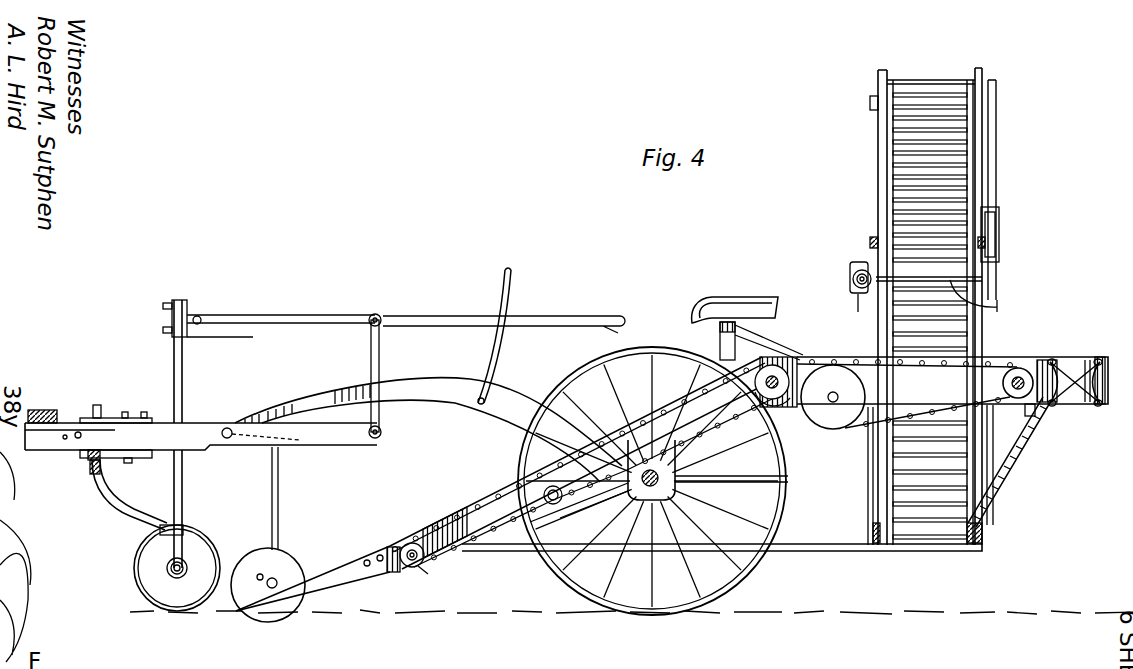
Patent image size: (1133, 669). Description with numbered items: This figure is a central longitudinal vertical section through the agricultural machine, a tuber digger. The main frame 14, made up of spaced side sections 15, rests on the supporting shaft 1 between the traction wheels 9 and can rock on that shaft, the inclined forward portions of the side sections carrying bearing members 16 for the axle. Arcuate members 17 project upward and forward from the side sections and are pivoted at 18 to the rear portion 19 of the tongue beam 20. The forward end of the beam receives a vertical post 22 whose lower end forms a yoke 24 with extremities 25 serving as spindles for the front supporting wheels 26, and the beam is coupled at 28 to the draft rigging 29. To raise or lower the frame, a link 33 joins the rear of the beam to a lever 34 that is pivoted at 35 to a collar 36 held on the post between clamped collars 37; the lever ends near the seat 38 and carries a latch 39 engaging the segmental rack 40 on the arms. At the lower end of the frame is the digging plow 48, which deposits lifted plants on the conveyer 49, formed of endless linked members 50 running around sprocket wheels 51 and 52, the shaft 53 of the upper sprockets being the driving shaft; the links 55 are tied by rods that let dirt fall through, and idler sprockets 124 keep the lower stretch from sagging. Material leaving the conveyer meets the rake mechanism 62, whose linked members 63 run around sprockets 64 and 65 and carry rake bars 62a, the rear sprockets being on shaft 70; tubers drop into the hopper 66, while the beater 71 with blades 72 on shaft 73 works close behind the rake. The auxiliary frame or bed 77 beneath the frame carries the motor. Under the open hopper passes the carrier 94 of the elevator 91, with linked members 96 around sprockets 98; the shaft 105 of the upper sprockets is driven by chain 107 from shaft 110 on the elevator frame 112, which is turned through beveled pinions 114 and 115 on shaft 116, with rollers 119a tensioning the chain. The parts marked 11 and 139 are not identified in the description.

The supporting shaft 1 is at (690, 472).
The traction wheels 9 is at (760, 569).
The axle 11 is at (680, 511).
The main frame 14 is at (470, 509).
The side sections 15 is at (423, 537).
The bearing members 16 is at (600, 507).
The arcuate members 17 is at (453, 397).
The pivotal connection 18 is at (230, 428).
The rear portion of tongue beam 19 is at (314, 441).
The tongue beam 20 is at (136, 418).
The post 22 is at (183, 366).
The yoke 24 is at (182, 506).
The yoke extremities 25 is at (178, 576).
The front supporting wheels 26 is at (205, 560).
The coupling 28 is at (140, 432).
The draft rigging 29 is at (50, 410).
The link 33 is at (380, 366).
The lever 34 is at (290, 315).
The pivot 35 is at (199, 317).
The collar 36 is at (170, 318).
The collars 37 is at (177, 299).
The seat 38 is at (733, 298).
The latch 39 is at (520, 317).
The segmental rack 40 is at (509, 276).
The digging point or plow 48 is at (337, 584).
The conveyer 49 is at (445, 520).
The endless linked members 50 is at (670, 402).
The sprocket wheels 51 is at (428, 566).
The sprocket wheels 52 is at (785, 365).
The driving shaft 53 is at (795, 406).
The links 55 is at (488, 540).
The rake mechanism 62 is at (845, 433).
The rake bars 62a is at (932, 406).
The endless linked members 63 is at (1008, 366).
The sprockets 64 is at (870, 399).
The sprockets 65 is at (1056, 360).
The hopper 66 is at (1000, 490).
The shaft 70 is at (1031, 428).
The beater 71 is at (1098, 357).
The blades 72 is at (1055, 404).
The shaft 73 is at (996, 408).
The auxiliary frame or bed 77 is at (832, 551).
The elevator 91 is at (877, 150).
The endless carrier 94 is at (930, 540).
The linked members 96 is at (884, 497).
The sprockets 98 is at (895, 80).
The shaft 105 is at (868, 102).
The chain 107 is at (998, 161).
The shaft 110 is at (999, 302).
The main frame of the elevator 112 is at (876, 338).
The beveled pinion 114 is at (852, 262).
The beveled pinion 115 is at (858, 297).
The shaft 116 is at (852, 281).
The rollers 119a is at (996, 226).
The idler sprockets 124 is at (548, 506).
The upper plate 139 is at (333, 574).